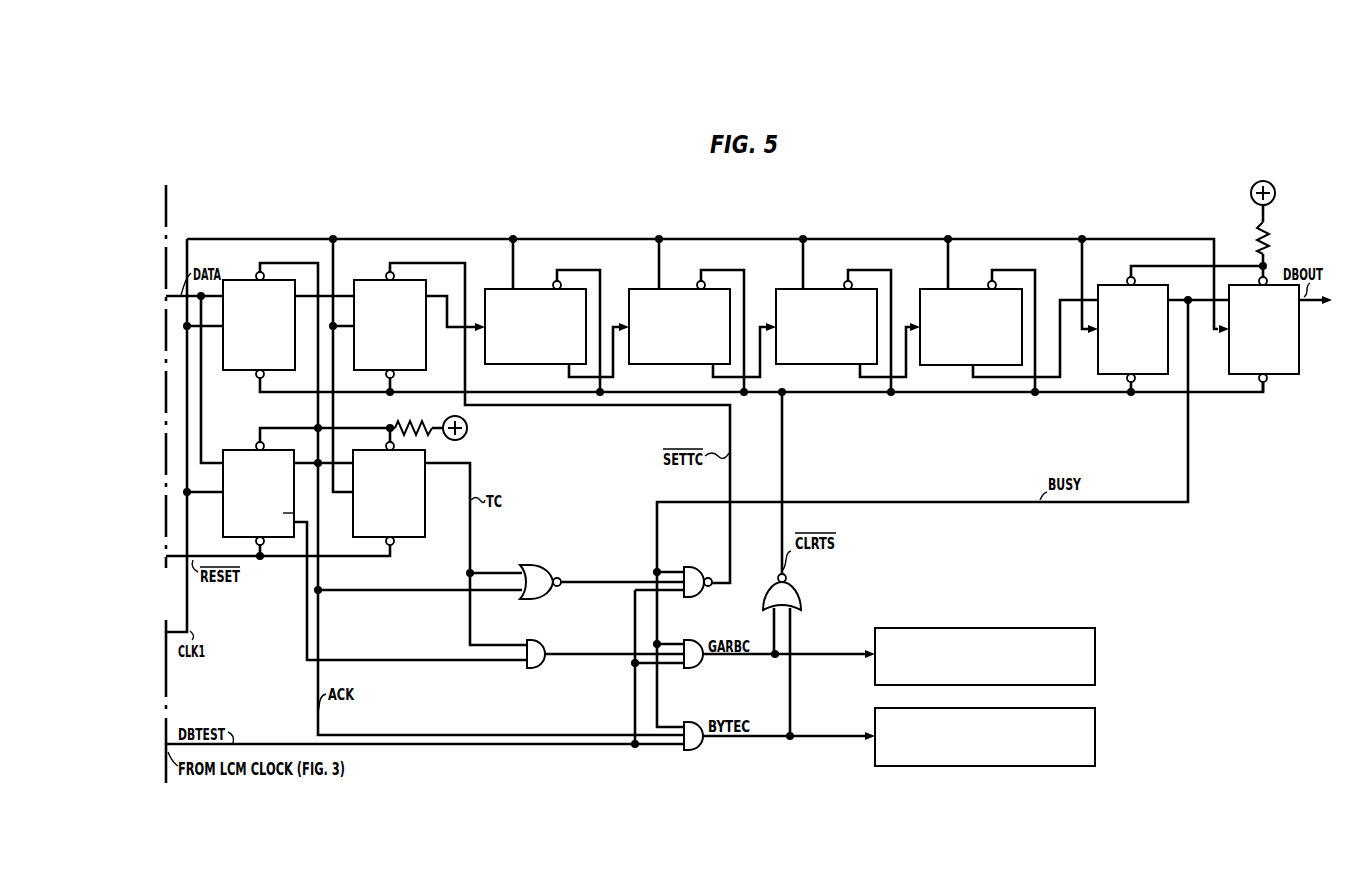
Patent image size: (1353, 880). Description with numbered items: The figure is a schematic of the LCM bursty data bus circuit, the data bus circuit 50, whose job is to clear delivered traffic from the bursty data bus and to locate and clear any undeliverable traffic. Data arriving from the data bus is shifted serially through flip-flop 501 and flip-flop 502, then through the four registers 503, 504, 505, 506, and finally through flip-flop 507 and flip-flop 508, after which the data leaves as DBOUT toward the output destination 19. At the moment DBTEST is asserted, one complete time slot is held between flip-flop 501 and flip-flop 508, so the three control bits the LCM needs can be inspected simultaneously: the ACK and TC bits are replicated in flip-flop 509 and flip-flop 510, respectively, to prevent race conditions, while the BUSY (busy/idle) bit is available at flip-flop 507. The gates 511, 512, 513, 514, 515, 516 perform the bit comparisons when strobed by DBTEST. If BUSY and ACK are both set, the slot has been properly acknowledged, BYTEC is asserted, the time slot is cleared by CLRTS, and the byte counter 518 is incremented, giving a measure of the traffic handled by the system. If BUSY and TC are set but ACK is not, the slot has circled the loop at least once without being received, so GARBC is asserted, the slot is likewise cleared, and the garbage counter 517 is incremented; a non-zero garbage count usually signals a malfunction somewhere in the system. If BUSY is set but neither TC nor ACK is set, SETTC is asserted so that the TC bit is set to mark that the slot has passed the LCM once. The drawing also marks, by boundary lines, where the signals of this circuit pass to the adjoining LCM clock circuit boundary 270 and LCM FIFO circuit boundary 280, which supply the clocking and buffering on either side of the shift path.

The output destination (DBOUT to 19) 19 is at (1317, 306).
The data bus circuit 50 is at (697, 414).
The LCM clock circuit boundary 270 is at (167, 692).
The LCM FIFO circuit boundary 280 is at (167, 225).
The flip-flop 501 is at (245, 280).
The flip-flop 502 is at (376, 280).
The register 503 is at (539, 286).
The register 504 is at (683, 286).
The register 505 is at (830, 286).
The register 506 is at (974, 286).
The flip-flop 507 is at (1110, 286).
The flip-flop 508 is at (1228, 341).
The flip-flop 509 is at (244, 450).
The flip-flop 510 is at (404, 542).
The gate 511 is at (531, 546).
The gate 512 is at (531, 624).
The gate 513 is at (686, 546).
The gate 514 is at (686, 624).
The gate 515 is at (686, 705).
The gate 516 is at (798, 588).
The garbage counter 517 is at (1097, 661).
The byte counter 518 is at (1097, 740).